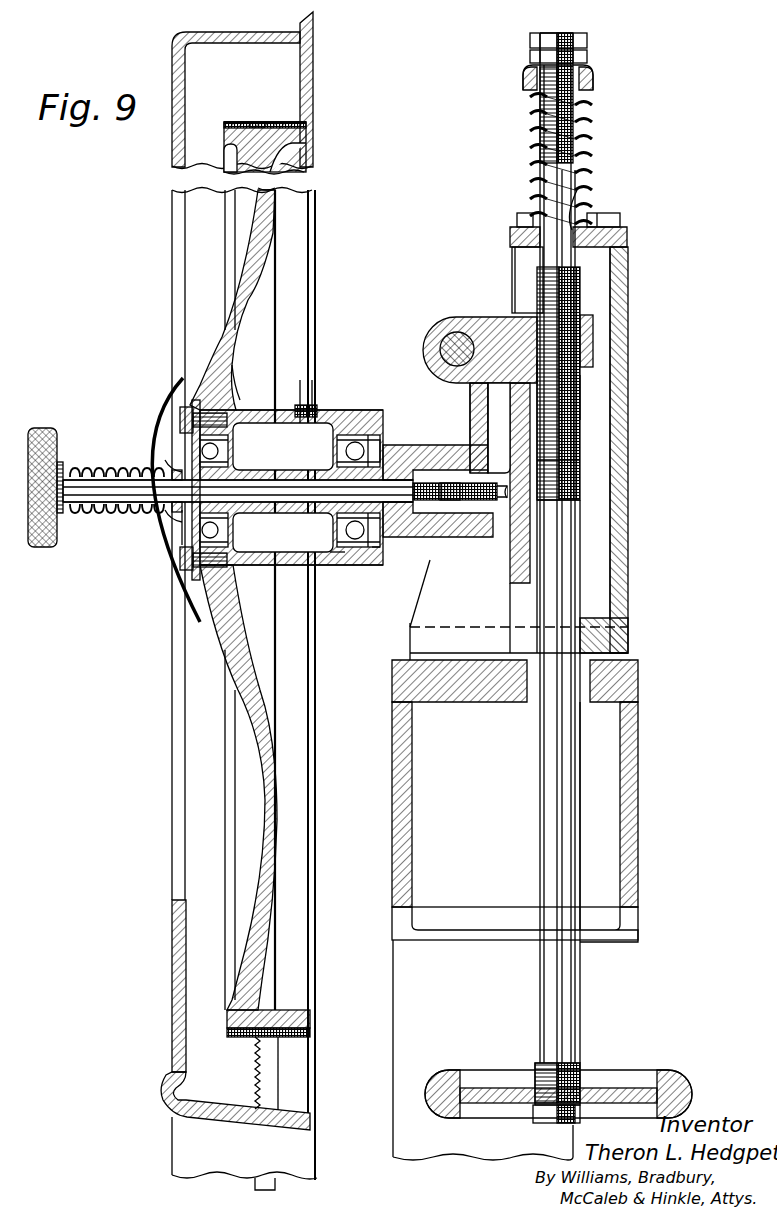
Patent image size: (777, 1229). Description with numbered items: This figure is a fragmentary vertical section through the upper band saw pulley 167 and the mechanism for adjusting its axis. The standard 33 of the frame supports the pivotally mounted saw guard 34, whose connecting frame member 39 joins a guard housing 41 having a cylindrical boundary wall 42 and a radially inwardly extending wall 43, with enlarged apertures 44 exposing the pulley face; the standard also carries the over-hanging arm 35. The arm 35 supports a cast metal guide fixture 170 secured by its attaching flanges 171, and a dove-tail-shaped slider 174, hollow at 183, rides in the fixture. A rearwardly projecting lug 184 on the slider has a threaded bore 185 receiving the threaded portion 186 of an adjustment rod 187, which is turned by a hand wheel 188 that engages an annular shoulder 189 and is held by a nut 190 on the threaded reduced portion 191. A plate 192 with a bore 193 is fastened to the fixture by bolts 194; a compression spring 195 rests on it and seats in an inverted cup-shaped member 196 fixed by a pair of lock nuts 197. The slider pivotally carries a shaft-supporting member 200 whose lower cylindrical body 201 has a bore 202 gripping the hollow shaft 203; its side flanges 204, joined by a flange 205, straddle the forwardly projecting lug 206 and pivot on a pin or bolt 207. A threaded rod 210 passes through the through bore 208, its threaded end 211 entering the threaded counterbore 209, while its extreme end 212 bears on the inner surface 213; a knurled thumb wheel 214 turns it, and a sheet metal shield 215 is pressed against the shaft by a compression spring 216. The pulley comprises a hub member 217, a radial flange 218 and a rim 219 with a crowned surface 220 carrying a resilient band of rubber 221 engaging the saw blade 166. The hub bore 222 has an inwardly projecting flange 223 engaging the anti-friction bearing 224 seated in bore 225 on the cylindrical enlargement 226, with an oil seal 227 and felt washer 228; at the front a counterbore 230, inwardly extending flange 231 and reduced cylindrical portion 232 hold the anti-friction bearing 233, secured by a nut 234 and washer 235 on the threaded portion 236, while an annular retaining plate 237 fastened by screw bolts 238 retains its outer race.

The standard 33 is at (402, 1133).
The saw guard 34 is at (178, 1142).
The over-hanging arm 35 is at (640, 730).
The connecting frame member 39 is at (220, 1163).
The guard housing 41 is at (203, 888).
The cylindrical boundary wall 42 is at (222, 32).
The radially inwardly extending wall 43 is at (180, 1005).
The enlarged apertures 44 is at (180, 918).
The saw blade 166 is at (265, 120).
The upper band saw pulley 167 is at (250, 287).
The guide fixture 170 is at (630, 447).
The attaching flanges 171 is at (600, 635).
The slider 174 is at (500, 320).
The hollow 183 is at (618, 418).
The rearwardly projecting lug 184 is at (594, 337).
The threaded bore 185 is at (578, 300).
The threaded portion 186 is at (581, 382).
The adjustment rod 187 is at (584, 780).
The hand wheel 188 is at (672, 1075).
The annular shoulder 189 is at (576, 1060).
The nut 190 is at (575, 1105).
The threaded reduced portion 191 is at (582, 1085).
The plate 192 is at (622, 228).
The bore 193 is at (576, 200).
The bolts 194 is at (608, 214).
The compression spring 195 is at (582, 153).
The inverted cup-shaped member 196 is at (594, 86).
The lock nuts 197 is at (588, 58).
The shaft-supporting member 200 is at (312, 395).
The lower cylindrical body 201 is at (415, 538).
The bore 202 is at (467, 537).
The hollow shaft 203 is at (284, 470).
The side flanges 204 is at (418, 400).
The flange 205 is at (474, 398).
The forwardly projecting lug 206 is at (440, 340).
The pin or bolt 207 is at (452, 318).
The through bore 208 is at (297, 513).
The threaded counterbore 209 is at (495, 440).
The threaded rod 210 is at (258, 525).
The threaded end 211 is at (458, 540).
The extreme end 212 is at (513, 498).
The inner surface 213 is at (510, 469).
The knurled thumb wheel 214 is at (43, 548).
The sheet metal shield 215 is at (186, 405).
The compression spring 216 is at (105, 505).
The hub member 217 is at (282, 393).
The radial flange 218 is at (277, 233).
The rim 219 is at (282, 155).
The crowned surface 220 is at (283, 127).
The resilient band of rubber 221 is at (238, 125).
The bore 222 is at (303, 393).
The inwardly projecting flange 223 is at (355, 425).
The anti-friction bearing 224 is at (345, 568).
The bore 225 is at (345, 566).
The cylindrical enlargement 226 is at (282, 566).
The oil seal 227 is at (472, 430).
The felt washer 228 is at (385, 565).
The counterbore 230 is at (297, 387).
The inwardly extending flange 231 is at (266, 446).
The reduced cylindrical portion 232 is at (186, 412).
The anti-friction bearing 233 is at (198, 605).
The nut 234 is at (178, 516).
The washer 235 is at (188, 535).
The threaded portion 236 is at (178, 468).
The annular retaining plate 237 is at (192, 378).
The screw bolts 238 is at (188, 392).